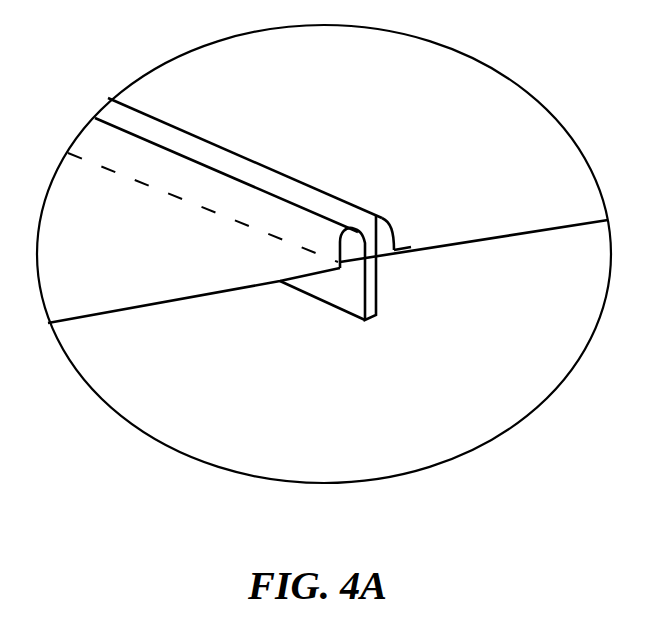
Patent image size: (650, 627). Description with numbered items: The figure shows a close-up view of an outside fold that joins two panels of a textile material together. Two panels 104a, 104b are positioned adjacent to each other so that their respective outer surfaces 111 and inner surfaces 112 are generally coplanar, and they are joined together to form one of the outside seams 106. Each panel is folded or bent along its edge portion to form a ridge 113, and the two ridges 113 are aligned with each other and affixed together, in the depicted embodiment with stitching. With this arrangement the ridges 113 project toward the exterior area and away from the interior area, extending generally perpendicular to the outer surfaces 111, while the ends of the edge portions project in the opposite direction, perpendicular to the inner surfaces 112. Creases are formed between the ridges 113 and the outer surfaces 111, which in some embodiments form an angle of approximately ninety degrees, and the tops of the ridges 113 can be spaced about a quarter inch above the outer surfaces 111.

The panel 104a is at (140, 268).
The panel 104b is at (492, 160).
The outside seam 106 is at (441, 299).
The outer surface 111 is at (253, 188).
The inner surface 112 is at (184, 326).
The ridge 113 is at (295, 194).